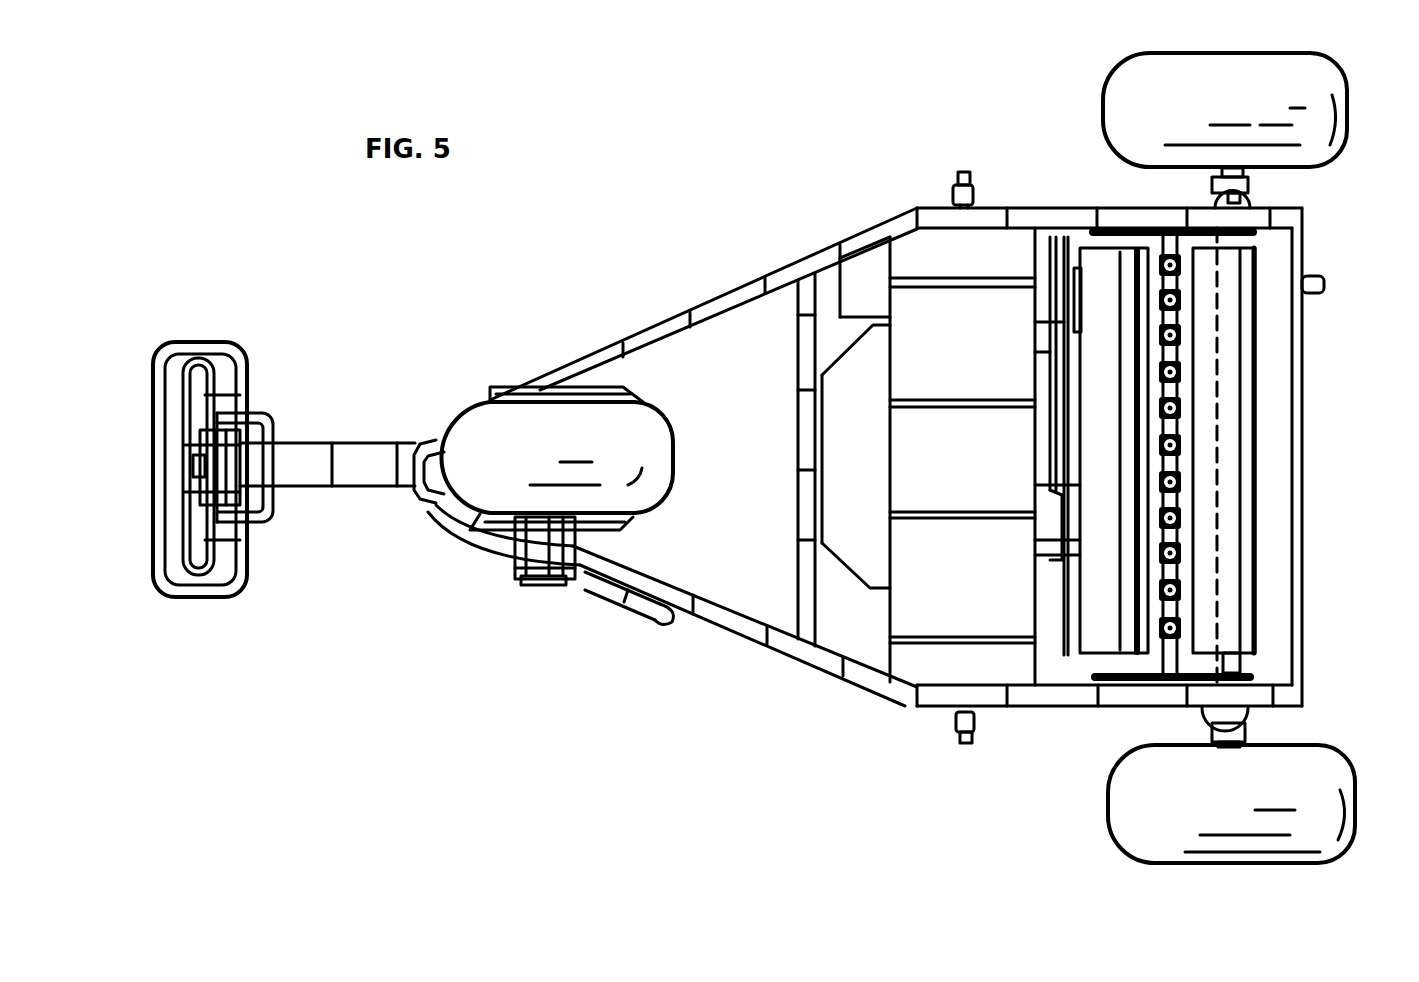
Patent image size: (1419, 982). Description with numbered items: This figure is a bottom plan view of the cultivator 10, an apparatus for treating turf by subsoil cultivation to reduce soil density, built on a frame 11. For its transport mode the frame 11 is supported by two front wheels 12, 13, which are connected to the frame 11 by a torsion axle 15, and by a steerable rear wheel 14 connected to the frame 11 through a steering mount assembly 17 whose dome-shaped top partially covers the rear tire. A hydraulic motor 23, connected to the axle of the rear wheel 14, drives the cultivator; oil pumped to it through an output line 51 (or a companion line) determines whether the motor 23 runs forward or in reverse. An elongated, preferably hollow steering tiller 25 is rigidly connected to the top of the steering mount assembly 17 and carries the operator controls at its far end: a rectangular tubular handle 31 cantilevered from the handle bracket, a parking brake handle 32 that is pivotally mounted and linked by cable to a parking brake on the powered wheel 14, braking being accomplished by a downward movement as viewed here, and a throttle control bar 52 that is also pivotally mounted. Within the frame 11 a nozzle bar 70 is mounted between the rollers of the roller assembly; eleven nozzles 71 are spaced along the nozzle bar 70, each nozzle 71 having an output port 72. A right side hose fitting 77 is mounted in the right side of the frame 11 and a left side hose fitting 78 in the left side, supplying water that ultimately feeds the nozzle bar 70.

The cultivator 10 is at (716, 248).
The frame 11 is at (910, 710).
The front wheel 12 is at (1328, 73).
The front wheel 13 is at (1123, 816).
The steerable rear wheel 14 is at (446, 420).
The torsion axle 15 is at (1287, 450).
The steering mount assembly 17 is at (490, 391).
The hydraulic motor 23 is at (518, 578).
The steering tiller 25 is at (341, 446).
The rectangular handle 31 is at (246, 378).
The parking brake handle 32 is at (264, 519).
The output line 51 is at (603, 589).
The throttle control bar 52 is at (200, 368).
The nozzle bar 70 is at (1180, 229).
The nozzle 71 is at (1183, 337).
The output port 72 is at (1157, 302).
The right side hose fitting 77 is at (963, 179).
The left side hose fitting 78 is at (973, 730).